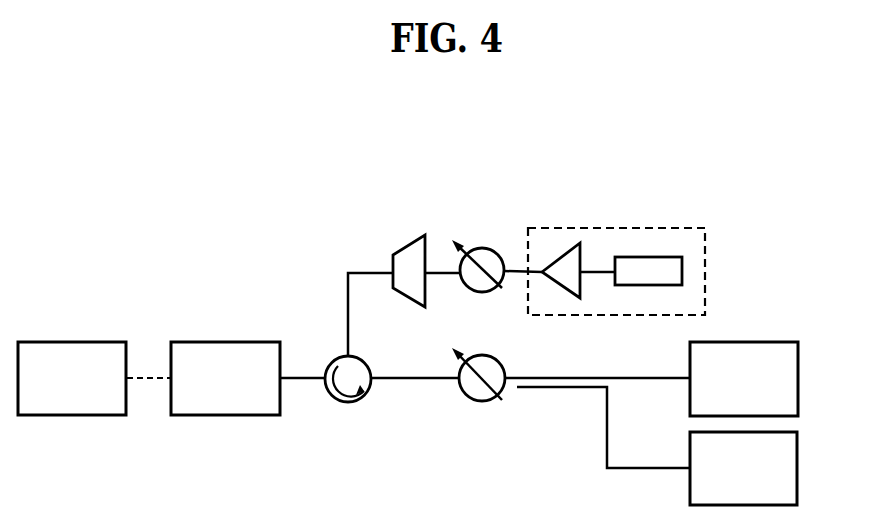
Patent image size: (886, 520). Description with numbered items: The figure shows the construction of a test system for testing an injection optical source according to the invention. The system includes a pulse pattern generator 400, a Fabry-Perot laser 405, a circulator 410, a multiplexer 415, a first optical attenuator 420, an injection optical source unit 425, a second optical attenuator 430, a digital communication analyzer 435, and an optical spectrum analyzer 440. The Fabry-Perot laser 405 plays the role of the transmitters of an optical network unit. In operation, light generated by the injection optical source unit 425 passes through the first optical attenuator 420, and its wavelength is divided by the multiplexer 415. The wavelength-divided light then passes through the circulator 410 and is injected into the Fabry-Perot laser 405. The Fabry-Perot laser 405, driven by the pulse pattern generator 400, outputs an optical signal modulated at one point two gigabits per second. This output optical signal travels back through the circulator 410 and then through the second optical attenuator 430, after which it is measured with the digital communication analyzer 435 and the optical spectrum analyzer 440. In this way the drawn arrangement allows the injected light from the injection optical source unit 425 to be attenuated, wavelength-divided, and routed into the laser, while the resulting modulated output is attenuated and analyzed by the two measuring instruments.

The pulse pattern generator 400 is at (72, 342).
The Fabry-Perot laser 405 is at (228, 342).
The circulator 410 is at (330, 360).
The multiplexer 415 is at (412, 258).
The first optical attenuator 420 is at (483, 257).
The injection optical source unit 425 is at (542, 237).
The second optical attenuator 430 is at (507, 358).
The digital communication analyzer 435 is at (798, 380).
The optical spectrum analyzer 440 is at (797, 468).